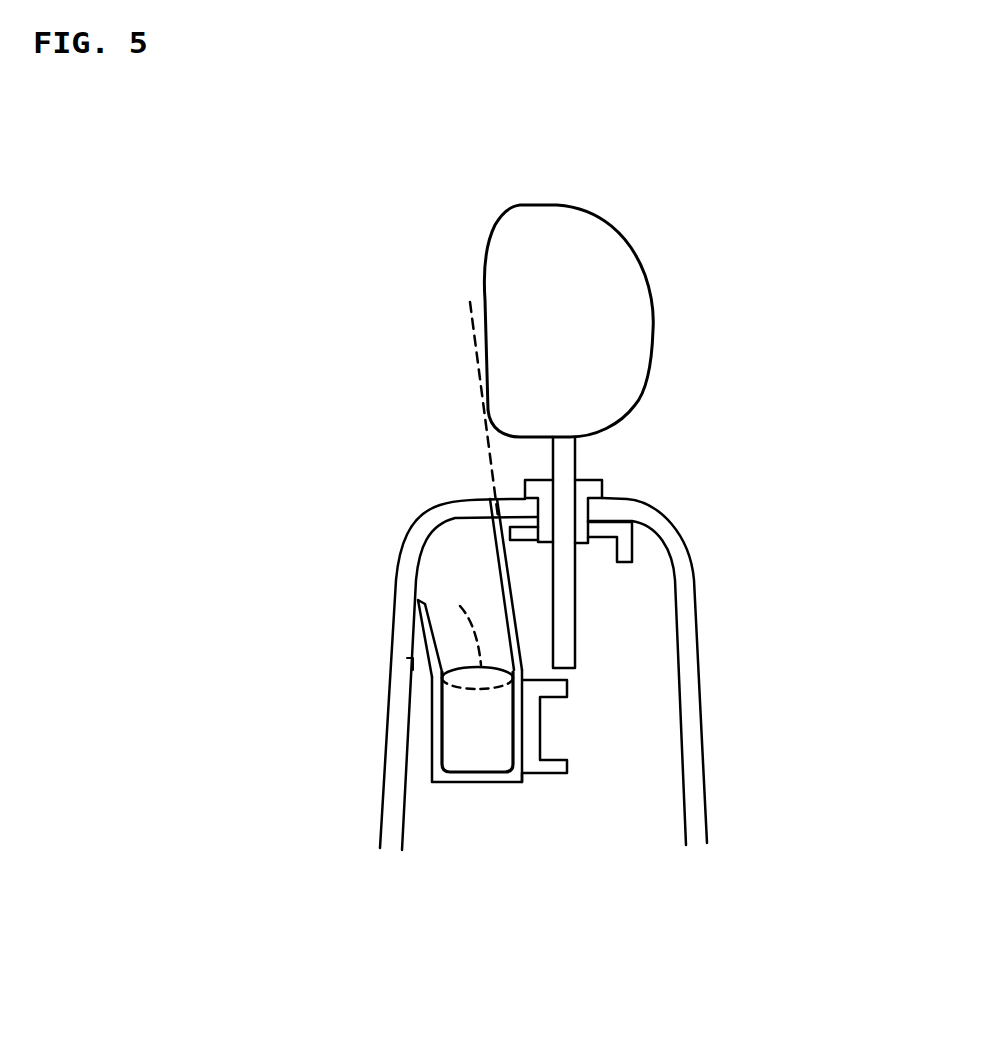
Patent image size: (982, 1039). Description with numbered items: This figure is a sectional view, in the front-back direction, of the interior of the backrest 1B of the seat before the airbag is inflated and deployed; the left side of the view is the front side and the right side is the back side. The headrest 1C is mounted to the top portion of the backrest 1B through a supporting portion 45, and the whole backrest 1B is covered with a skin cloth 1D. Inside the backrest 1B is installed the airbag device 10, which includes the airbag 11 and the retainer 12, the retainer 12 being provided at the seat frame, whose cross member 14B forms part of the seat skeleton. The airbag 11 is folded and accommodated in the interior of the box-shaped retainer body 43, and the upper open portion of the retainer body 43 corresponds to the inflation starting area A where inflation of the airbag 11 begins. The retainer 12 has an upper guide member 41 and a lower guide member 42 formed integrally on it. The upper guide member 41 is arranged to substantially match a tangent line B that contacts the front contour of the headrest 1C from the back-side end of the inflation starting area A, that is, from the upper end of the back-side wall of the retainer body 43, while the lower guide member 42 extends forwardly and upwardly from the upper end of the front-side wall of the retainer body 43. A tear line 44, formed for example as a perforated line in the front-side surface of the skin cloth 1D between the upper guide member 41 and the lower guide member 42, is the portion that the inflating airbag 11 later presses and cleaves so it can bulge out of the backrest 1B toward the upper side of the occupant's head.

The backrest 1B is at (538, 635).
The headrest 1C is at (653, 288).
The skin cloth 1D is at (388, 708).
The airbag device 10 is at (516, 696).
The airbag 11 is at (452, 746).
The retainer 12 is at (523, 799).
The cross member 14B is at (543, 775).
The upper guide member 41 is at (515, 577).
The lower guide member 42 is at (418, 639).
The retainer body 43 is at (470, 788).
The tear line 44 is at (432, 522).
The supporting portion 45 is at (577, 456).
The inflation starting area A is at (469, 622).
The tangent line B is at (472, 340).